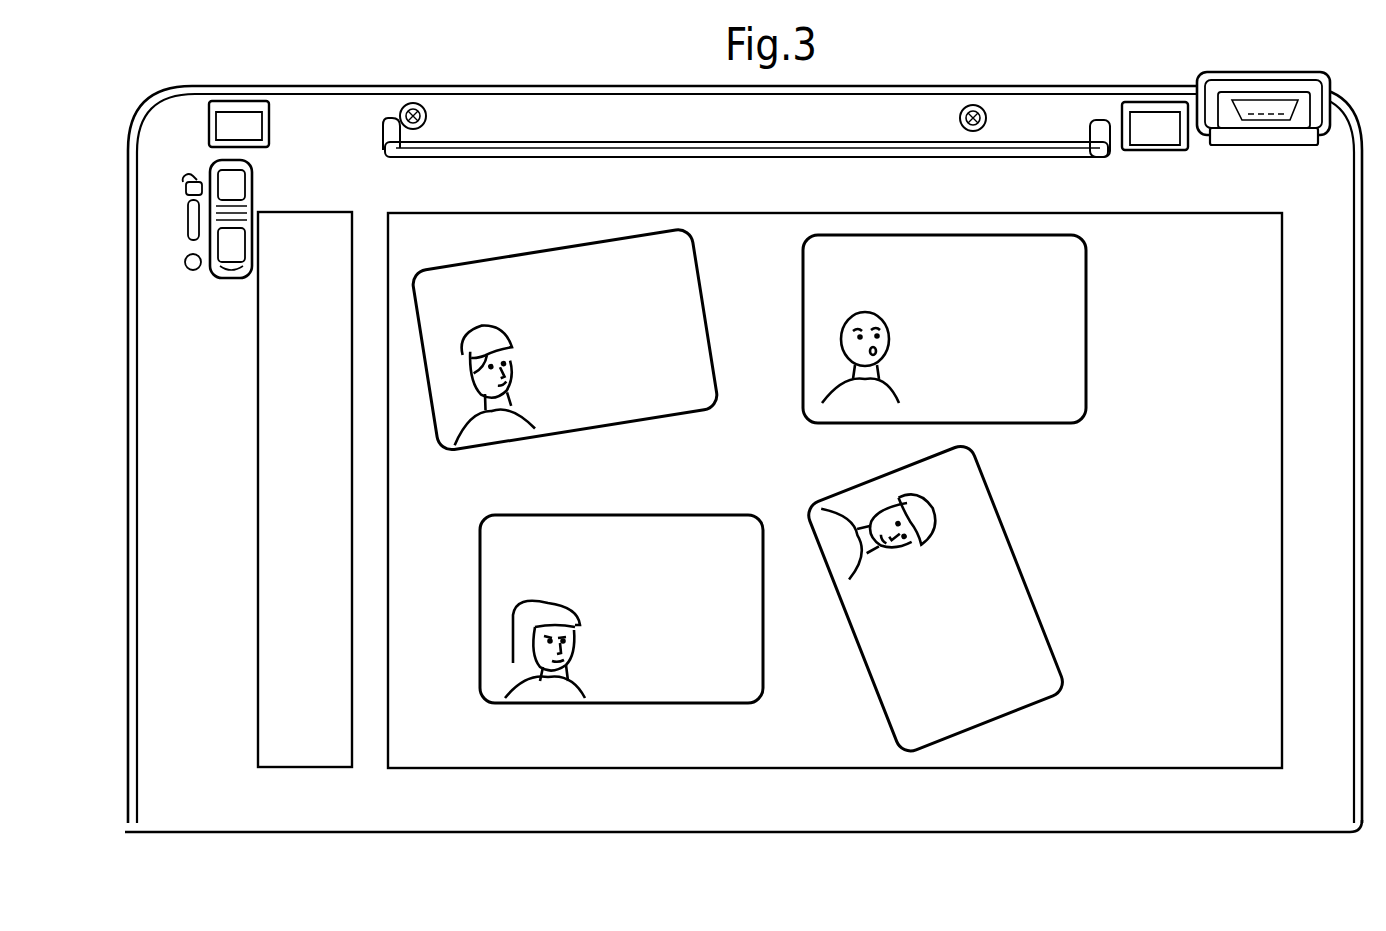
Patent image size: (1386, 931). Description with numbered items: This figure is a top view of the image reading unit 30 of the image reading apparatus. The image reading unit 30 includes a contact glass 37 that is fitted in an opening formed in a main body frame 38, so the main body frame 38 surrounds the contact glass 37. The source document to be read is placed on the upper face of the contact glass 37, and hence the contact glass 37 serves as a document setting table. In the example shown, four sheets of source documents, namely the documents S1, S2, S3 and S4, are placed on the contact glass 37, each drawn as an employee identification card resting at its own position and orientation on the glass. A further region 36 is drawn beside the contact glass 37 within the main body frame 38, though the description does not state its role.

The image reading unit 30 is at (1102, 67).
The side display area 36 is at (317, 753).
The contact glass 37 is at (788, 752).
The main body frame 38 is at (185, 807).
The document S1 is at (535, 250).
The document S2 is at (683, 703).
The document S3 is at (823, 235).
The document S4 is at (1048, 705).